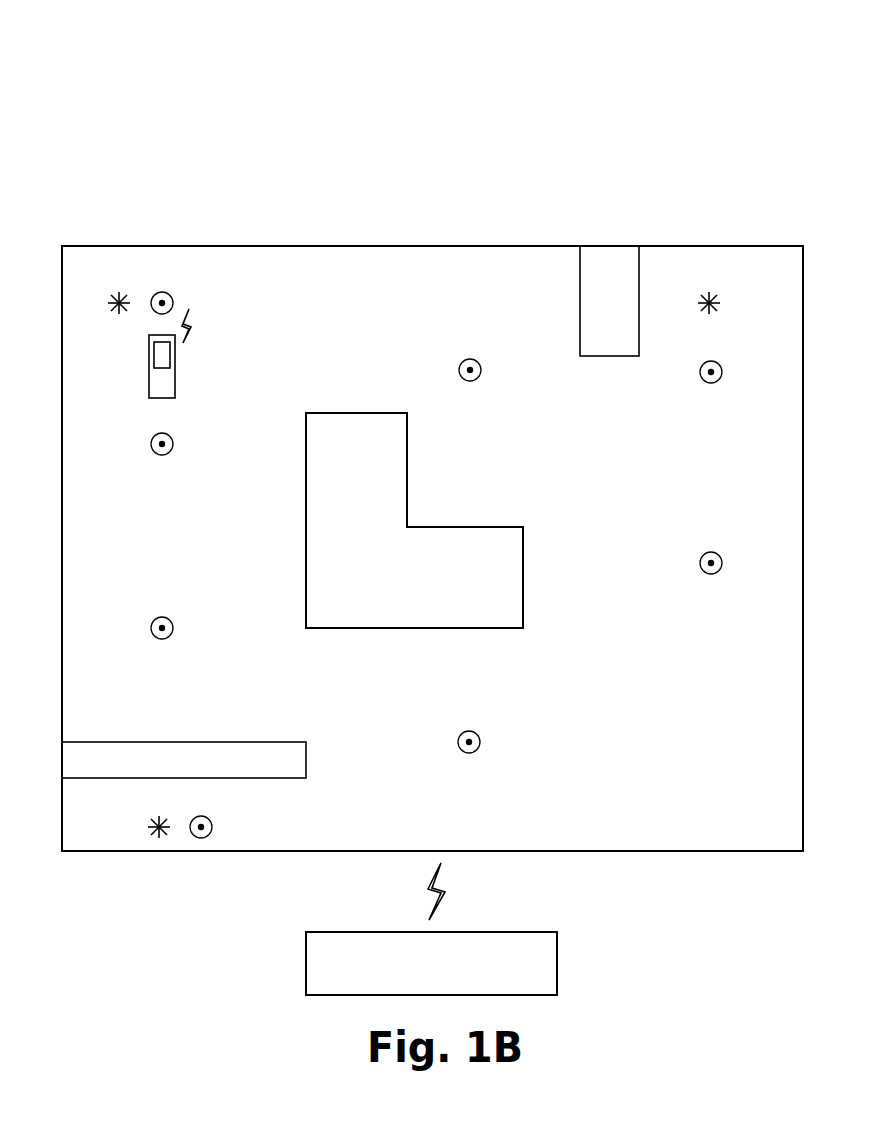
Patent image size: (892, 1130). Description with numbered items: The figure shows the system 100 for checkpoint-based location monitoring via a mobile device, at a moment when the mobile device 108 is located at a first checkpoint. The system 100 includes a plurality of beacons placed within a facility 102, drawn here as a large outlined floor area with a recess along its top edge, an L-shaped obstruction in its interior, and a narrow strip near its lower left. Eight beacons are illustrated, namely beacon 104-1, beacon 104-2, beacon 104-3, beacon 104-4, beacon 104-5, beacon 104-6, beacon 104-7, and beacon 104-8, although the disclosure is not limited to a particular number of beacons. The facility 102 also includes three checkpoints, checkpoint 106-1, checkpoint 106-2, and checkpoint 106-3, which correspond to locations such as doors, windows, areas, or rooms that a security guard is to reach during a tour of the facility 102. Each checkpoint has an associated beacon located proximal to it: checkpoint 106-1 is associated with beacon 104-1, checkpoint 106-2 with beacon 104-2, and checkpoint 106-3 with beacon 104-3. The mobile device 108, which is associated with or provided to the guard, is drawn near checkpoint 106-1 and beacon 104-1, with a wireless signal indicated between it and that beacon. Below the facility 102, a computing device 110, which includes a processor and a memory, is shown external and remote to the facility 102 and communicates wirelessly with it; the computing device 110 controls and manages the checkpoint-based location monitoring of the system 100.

The system 100 is at (720, 62).
The facility 102 is at (438, 245).
The beacon 104-1 is at (173, 303).
The beacon 104-2 is at (711, 383).
The beacon 104-3 is at (212, 827).
The beacon 104-4 is at (173, 444).
The beacon 104-5 is at (470, 381).
The beacon 104-6 is at (711, 574).
The beacon 104-7 is at (481, 742).
The beacon 104-8 is at (173, 628).
The checkpoint 106-1 is at (111, 278).
The checkpoint 106-2 is at (701, 277).
The checkpoint 106-3 is at (169, 848).
The mobile device 108 is at (175, 365).
The computing device 110 is at (558, 960).